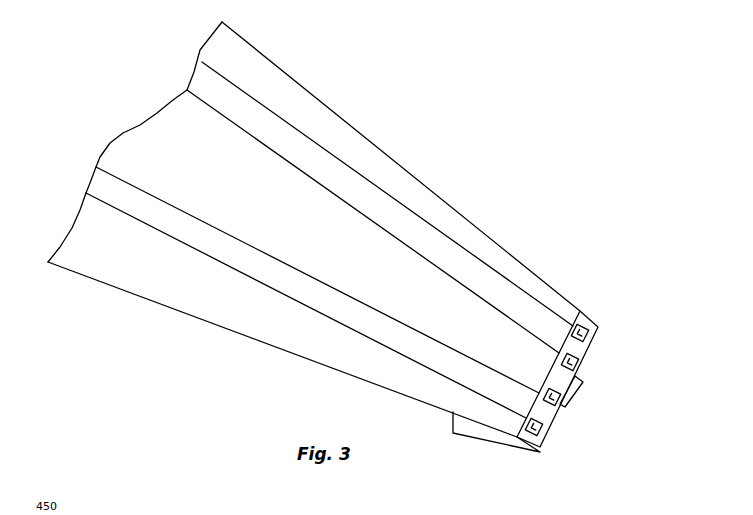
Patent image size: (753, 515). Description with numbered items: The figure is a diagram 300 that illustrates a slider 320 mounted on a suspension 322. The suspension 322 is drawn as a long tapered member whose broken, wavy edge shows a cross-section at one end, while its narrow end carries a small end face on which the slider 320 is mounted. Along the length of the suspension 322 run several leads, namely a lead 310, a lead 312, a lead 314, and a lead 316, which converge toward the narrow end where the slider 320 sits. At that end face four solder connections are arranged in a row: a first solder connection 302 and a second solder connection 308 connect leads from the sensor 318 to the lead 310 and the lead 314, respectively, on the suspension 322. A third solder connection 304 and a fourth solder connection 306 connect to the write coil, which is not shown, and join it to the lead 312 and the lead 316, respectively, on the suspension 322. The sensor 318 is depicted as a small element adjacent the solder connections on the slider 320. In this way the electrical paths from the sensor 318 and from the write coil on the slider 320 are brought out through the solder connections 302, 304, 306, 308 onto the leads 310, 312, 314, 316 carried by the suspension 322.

The diagram 300 is at (183, 377).
The first solder connection 302 is at (531, 434).
The third solder connection 304 is at (553, 402).
The fourth solder connection 306 is at (569, 357).
The second solder connection 308 is at (596, 327).
The lead 310 is at (283, 288).
The lead 312 is at (405, 318).
The lead 314 is at (457, 242).
The lead 316 is at (503, 308).
The sensor 318 is at (576, 387).
The slider 320 is at (483, 433).
The suspension 322 is at (397, 385).